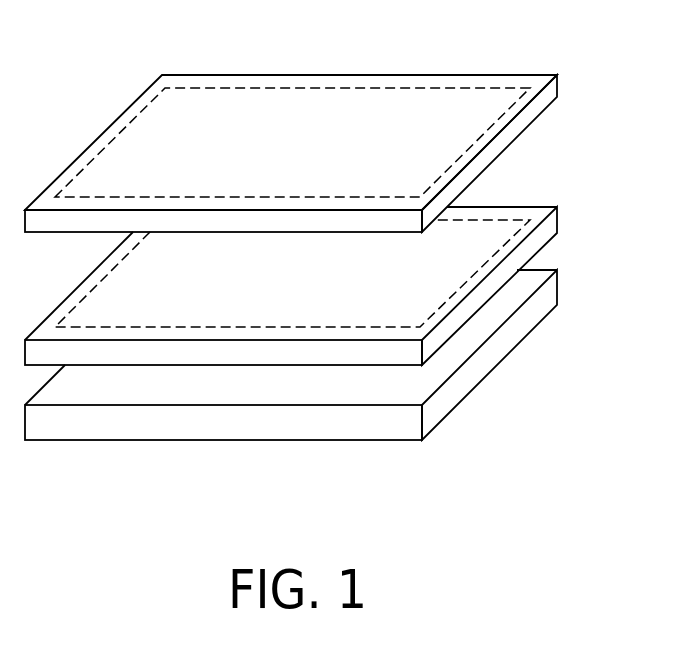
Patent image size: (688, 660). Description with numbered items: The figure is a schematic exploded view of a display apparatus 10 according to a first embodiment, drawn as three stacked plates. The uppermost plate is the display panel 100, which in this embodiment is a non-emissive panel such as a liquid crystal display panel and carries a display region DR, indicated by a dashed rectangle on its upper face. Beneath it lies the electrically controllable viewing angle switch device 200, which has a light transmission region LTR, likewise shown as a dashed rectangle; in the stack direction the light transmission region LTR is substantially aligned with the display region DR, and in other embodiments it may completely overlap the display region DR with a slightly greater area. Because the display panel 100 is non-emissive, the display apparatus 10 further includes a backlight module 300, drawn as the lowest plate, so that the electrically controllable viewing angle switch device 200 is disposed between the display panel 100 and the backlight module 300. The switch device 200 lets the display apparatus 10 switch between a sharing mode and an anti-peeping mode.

The display apparatus 10 is at (578, 497).
The display panel 100 is at (540, 102).
The electrically controllable viewing angle switch device 200 is at (543, 232).
The backlight module 300 is at (543, 302).
The display region DR is at (513, 85).
The light transmission region LTR is at (510, 212).